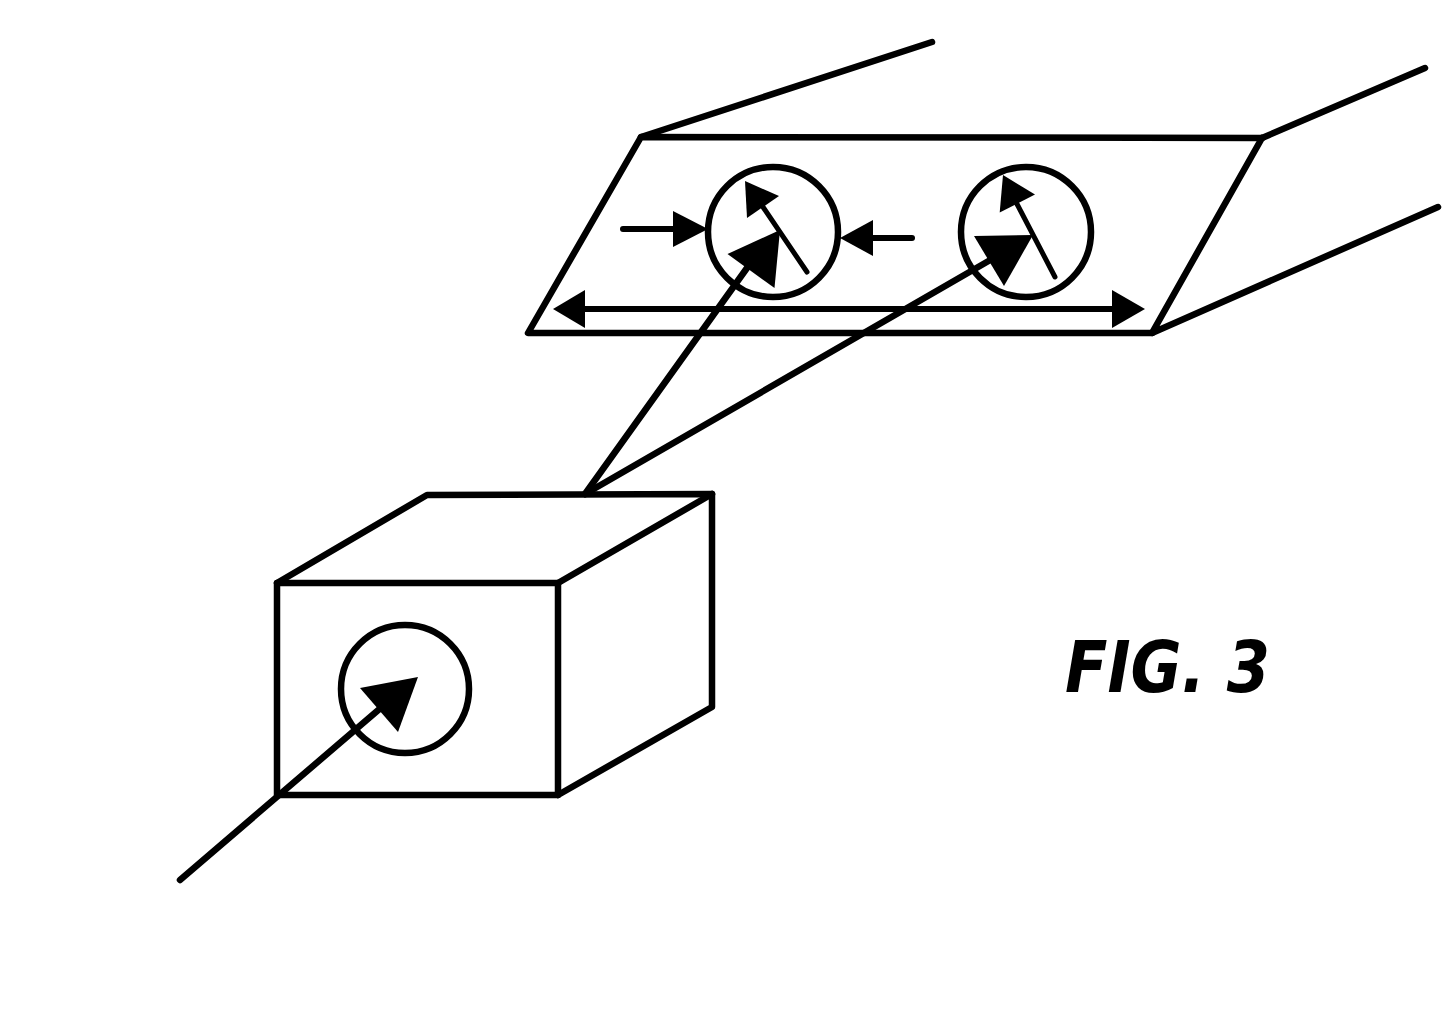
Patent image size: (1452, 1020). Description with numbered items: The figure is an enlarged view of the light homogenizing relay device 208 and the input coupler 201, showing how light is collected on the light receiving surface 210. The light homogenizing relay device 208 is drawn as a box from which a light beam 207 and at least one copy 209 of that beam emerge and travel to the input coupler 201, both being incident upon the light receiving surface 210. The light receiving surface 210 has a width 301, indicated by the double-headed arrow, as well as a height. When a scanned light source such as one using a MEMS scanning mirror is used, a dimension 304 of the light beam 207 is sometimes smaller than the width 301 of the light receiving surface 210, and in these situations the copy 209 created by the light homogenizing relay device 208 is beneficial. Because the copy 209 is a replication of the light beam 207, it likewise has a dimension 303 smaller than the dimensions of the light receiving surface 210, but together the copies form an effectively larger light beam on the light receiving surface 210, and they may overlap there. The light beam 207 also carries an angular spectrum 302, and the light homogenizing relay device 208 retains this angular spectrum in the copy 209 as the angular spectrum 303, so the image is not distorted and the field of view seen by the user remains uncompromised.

The input coupler 201 is at (842, 112).
The light beam 207 is at (712, 262).
The light homogenizing relay device 208 is at (650, 605).
The copy 209 is at (1003, 293).
The light receiving surface 210 is at (1172, 217).
The width 301 is at (1037, 312).
The angular spectrum 302 is at (762, 212).
The angular spectrum of the copy 303 is at (1020, 217).
The dimension 304 is at (658, 226).